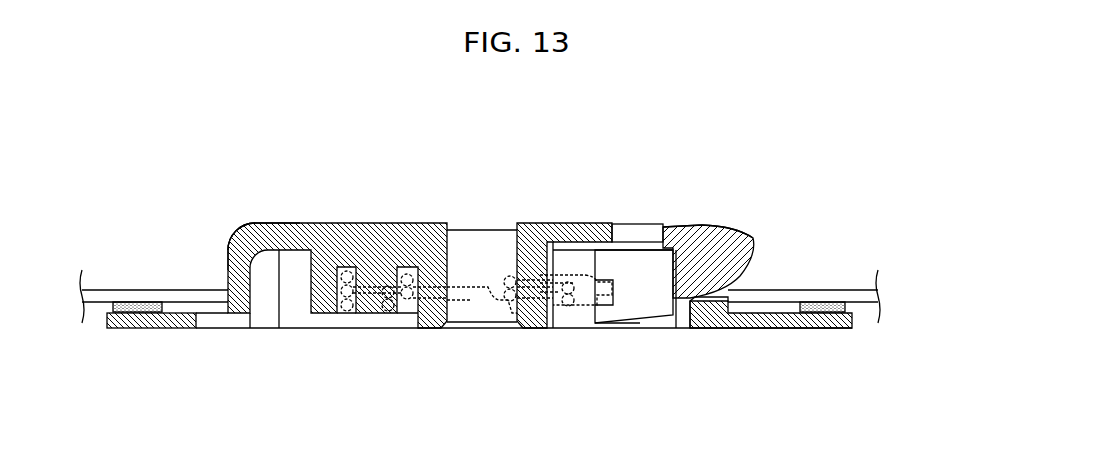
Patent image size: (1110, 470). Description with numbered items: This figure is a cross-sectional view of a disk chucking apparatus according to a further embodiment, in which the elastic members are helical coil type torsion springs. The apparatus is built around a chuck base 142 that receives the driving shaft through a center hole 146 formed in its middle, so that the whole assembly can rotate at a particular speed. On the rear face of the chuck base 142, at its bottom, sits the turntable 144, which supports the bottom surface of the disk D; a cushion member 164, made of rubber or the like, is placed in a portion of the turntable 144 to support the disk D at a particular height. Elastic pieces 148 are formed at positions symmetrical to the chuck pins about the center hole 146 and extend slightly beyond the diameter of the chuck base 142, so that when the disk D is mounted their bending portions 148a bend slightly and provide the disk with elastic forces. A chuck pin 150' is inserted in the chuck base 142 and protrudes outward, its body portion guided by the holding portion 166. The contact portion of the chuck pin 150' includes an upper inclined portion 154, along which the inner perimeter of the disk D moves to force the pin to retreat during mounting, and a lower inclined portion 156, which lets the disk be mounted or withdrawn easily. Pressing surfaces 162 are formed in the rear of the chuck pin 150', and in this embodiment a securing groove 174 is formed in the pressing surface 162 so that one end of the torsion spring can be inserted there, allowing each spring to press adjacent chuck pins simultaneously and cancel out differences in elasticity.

The disk D is at (106, 296).
The chuck base 142 is at (322, 223).
The turntable 144 is at (180, 330).
The center hole 146 is at (448, 230).
The elastic piece 148 is at (257, 222).
The bending portion 148a is at (234, 249).
The chuck pin 150' is at (710, 202).
The upper inclined portion 154 is at (745, 233).
The lower inclined portion 156 is at (750, 264).
The pressing surface 162 is at (645, 313).
The cushion member 164 is at (130, 302).
The holding portion 166 is at (633, 242).
The securing groove 174 is at (592, 304).